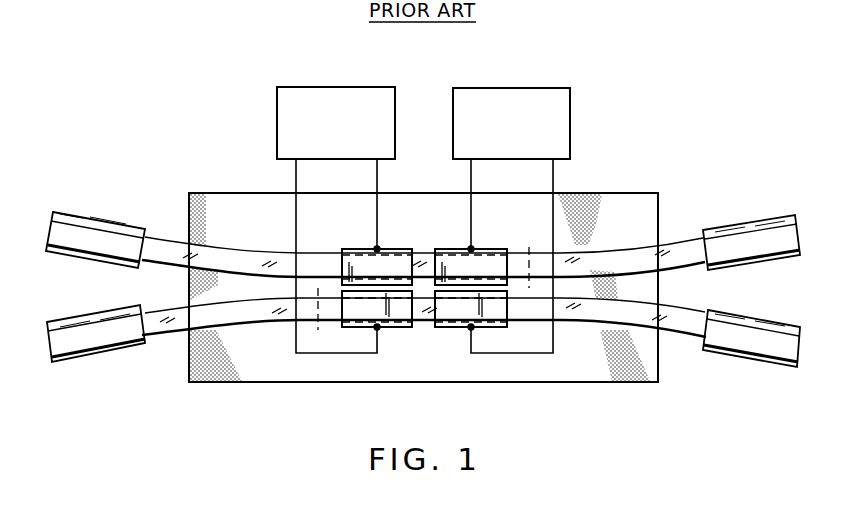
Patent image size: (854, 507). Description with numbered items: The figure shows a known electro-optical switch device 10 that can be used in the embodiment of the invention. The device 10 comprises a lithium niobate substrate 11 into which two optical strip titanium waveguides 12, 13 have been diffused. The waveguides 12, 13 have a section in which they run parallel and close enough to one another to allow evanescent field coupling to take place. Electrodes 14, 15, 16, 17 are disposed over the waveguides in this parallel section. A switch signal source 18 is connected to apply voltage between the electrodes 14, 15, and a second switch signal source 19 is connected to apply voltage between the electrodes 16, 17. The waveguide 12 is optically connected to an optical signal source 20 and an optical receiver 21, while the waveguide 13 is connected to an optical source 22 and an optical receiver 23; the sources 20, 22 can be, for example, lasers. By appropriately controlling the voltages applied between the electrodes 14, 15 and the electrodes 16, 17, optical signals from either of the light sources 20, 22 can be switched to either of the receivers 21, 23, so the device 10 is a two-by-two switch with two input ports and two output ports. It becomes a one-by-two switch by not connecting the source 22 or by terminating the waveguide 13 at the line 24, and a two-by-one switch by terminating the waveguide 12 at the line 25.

The device 10 is at (441, 419).
The lithium niobate substrate 11 is at (608, 193).
The optical strip titanium waveguide 12 is at (232, 246).
The optical strip titanium waveguide 13 is at (620, 331).
The electrode 14 is at (353, 249).
The electrode 15 is at (398, 328).
The electrode 16 is at (448, 249).
The electrode 17 is at (493, 328).
The switch signal source 18 is at (340, 87).
The switch signal source 19 is at (515, 88).
The optical signal source 20 is at (108, 220).
The optical receiver 21 is at (750, 224).
The optical source 22 is at (88, 312).
The optical receiver 23 is at (760, 318).
The line 24 is at (318, 330).
The line 25 is at (529, 247).